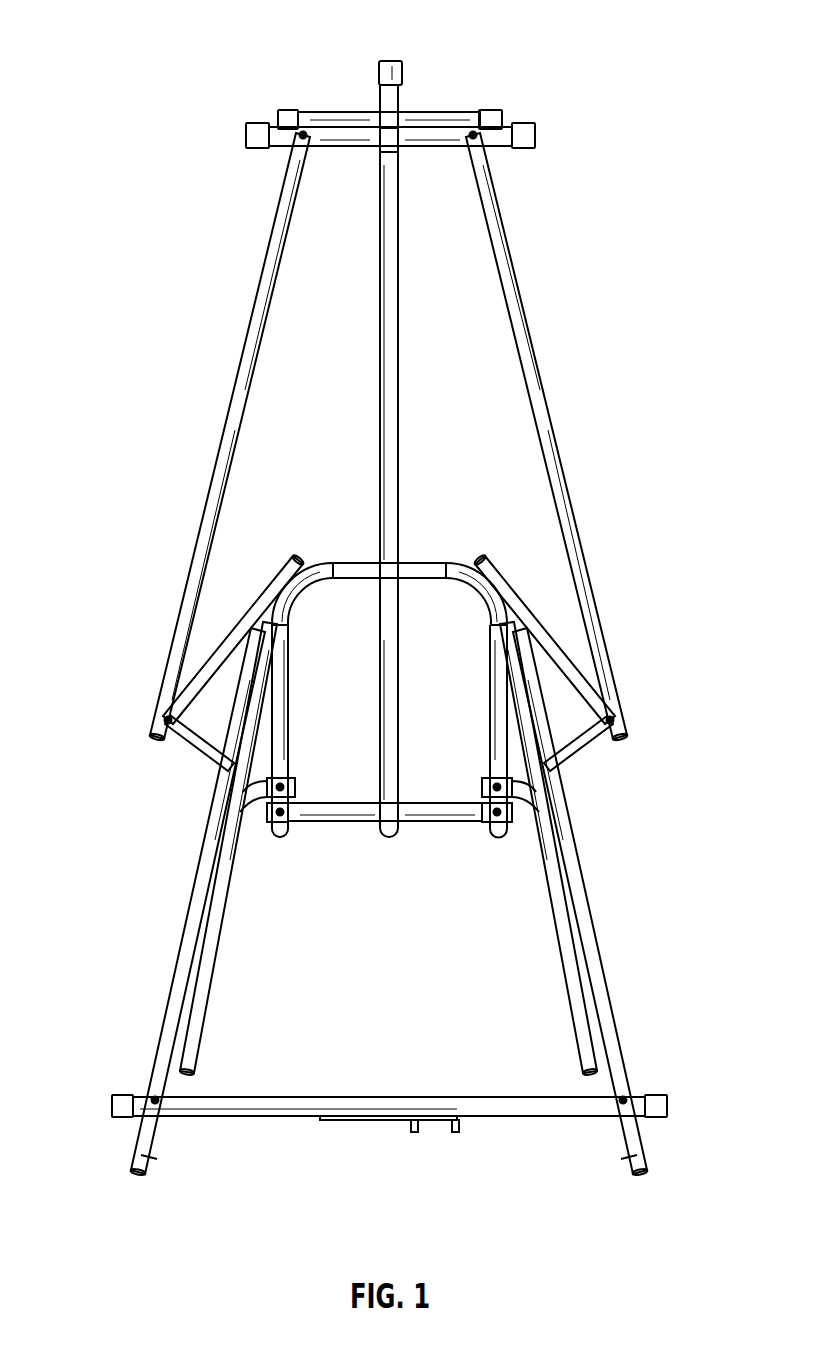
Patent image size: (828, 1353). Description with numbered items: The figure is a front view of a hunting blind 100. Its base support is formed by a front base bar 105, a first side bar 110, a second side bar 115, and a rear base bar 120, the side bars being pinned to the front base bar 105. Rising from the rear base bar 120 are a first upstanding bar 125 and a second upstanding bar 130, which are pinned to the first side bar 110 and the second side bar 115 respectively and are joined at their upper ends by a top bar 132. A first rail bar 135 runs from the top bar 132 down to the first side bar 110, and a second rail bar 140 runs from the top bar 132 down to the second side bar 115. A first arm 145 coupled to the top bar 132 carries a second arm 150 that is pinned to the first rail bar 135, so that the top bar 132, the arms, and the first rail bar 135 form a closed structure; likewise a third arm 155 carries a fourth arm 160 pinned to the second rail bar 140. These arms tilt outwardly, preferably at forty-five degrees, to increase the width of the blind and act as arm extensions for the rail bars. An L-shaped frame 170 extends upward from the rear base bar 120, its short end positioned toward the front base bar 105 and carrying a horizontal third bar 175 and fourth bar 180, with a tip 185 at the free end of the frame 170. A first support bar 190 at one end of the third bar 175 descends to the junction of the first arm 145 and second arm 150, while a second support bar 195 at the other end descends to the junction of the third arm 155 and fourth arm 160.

The hunting blind 100 is at (126, 29).
The front base bar 105 is at (558, 1121).
The first side bar 110 is at (622, 1052).
The second side bar 115 is at (162, 1055).
The rear base bar 120 is at (338, 825).
The first upstanding bar 125 is at (488, 677).
The second upstanding bar 130 is at (292, 675).
The top bar 132 is at (355, 560).
The first rail bar 135 is at (555, 905).
The second rail bar 140 is at (227, 905).
The first arm 145 is at (565, 652).
The second arm 150 is at (575, 758).
The third arm 155 is at (213, 647).
The fourth arm 160 is at (203, 757).
The frame 170 is at (405, 364).
The third bar 175 is at (425, 143).
The fourth bar 180 is at (465, 112).
The tip 185 is at (380, 92).
The first support bar 190 is at (540, 330).
The second support bar 195 is at (240, 338).